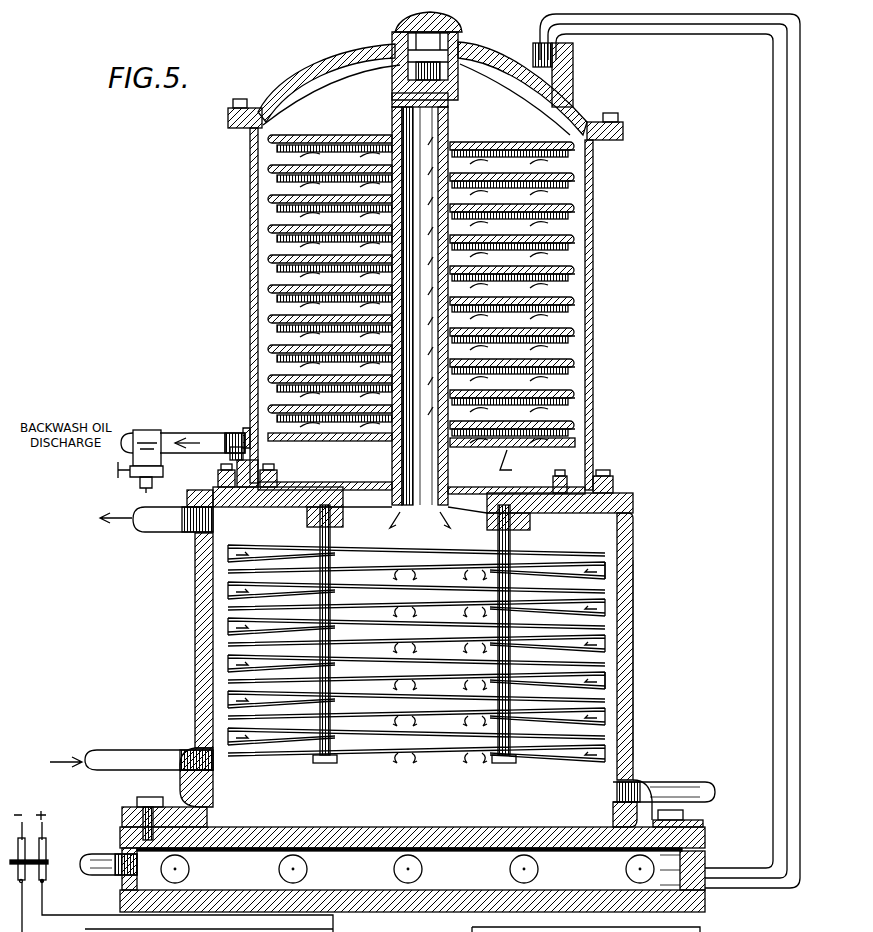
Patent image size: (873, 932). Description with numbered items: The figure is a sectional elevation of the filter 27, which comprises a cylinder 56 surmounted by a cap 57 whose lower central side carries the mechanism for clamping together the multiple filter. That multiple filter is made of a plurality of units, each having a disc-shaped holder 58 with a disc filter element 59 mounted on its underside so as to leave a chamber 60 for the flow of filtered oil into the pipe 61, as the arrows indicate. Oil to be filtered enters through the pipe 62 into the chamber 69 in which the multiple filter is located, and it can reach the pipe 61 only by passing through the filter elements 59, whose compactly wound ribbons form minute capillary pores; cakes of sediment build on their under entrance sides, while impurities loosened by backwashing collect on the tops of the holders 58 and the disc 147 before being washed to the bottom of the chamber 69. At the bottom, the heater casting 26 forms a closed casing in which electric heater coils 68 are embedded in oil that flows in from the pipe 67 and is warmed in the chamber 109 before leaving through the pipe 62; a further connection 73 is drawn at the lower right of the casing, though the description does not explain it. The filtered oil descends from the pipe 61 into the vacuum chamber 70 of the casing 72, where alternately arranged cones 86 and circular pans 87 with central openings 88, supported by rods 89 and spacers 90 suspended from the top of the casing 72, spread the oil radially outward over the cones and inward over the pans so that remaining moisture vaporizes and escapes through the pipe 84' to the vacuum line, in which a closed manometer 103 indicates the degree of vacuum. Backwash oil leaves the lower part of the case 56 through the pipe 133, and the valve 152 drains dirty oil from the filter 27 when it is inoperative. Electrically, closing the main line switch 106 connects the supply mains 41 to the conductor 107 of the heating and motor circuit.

The heater casting 26 is at (643, 823).
The filter 27 is at (228, 119).
The supply mains 41 is at (46, 828).
The cylinder 56 is at (250, 336).
The cap 57 is at (335, 52).
The disc-shaped holder 58 is at (578, 425).
The disc filter element 59 is at (588, 459).
The chamber 60 is at (485, 150).
The pipe 61 is at (430, 127).
The pipe 62 is at (566, 52).
The pipe 67 is at (96, 870).
The electric heater coils 68 is at (278, 872).
The chamber 69 is at (558, 136).
The chamber 70 is at (603, 532).
The casing 72 is at (634, 636).
The outlet pipe 73 is at (698, 792).
The pipe 84' is at (115, 538).
The cones 86 is at (461, 547).
The circular pans 87 is at (606, 605).
The openings 88 is at (438, 637).
The rods 89 is at (320, 533).
The spacers 90 is at (235, 575).
The closed manometer 103 is at (129, 757).
The main line switch 106 is at (46, 860).
The conductor 107 is at (59, 915).
The chamber 109 is at (450, 884).
The pipe 133 is at (190, 440).
The disc 147 is at (518, 460).
The valve 152 is at (122, 480).